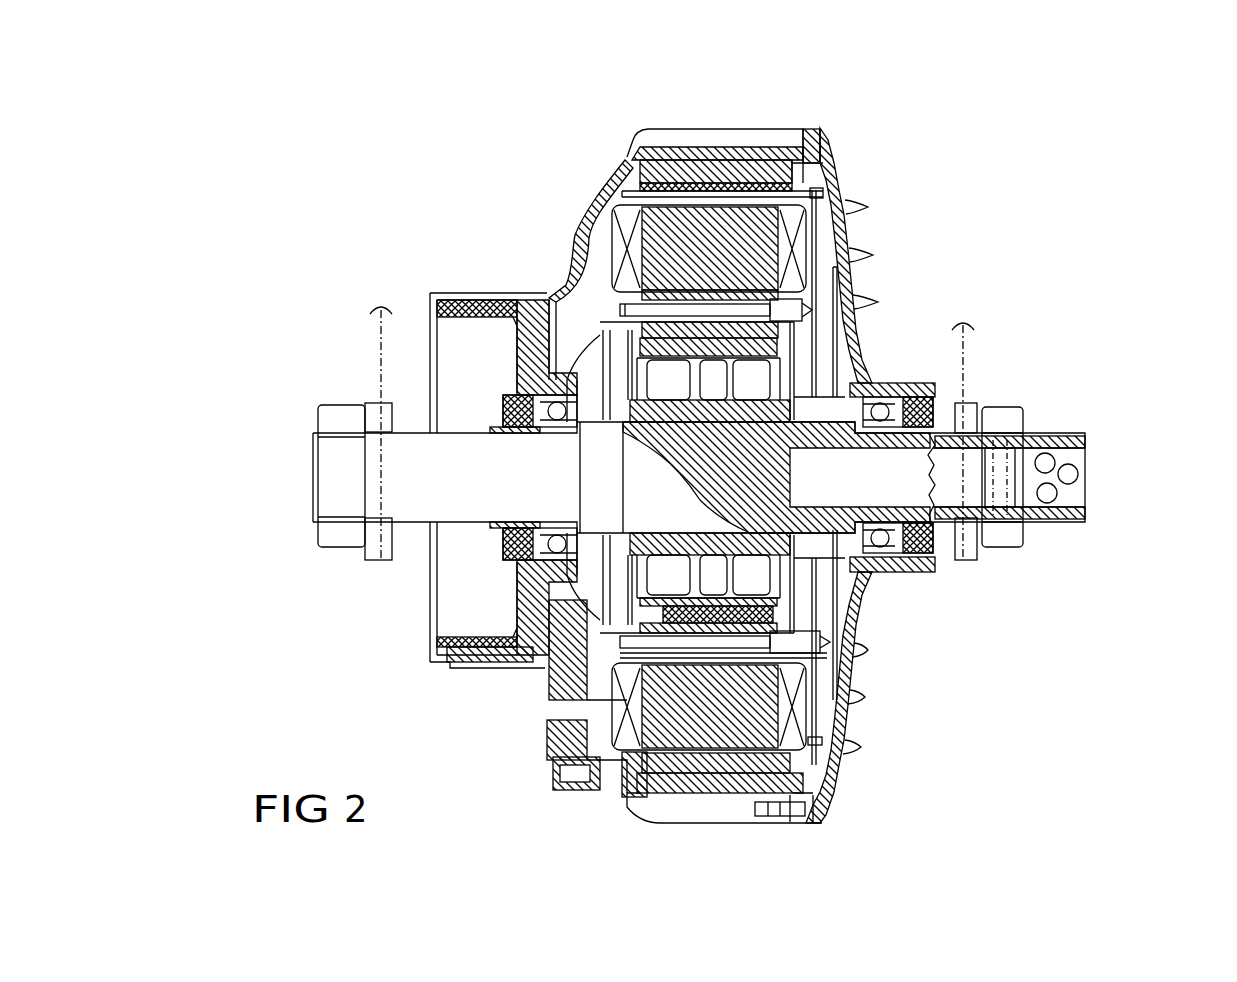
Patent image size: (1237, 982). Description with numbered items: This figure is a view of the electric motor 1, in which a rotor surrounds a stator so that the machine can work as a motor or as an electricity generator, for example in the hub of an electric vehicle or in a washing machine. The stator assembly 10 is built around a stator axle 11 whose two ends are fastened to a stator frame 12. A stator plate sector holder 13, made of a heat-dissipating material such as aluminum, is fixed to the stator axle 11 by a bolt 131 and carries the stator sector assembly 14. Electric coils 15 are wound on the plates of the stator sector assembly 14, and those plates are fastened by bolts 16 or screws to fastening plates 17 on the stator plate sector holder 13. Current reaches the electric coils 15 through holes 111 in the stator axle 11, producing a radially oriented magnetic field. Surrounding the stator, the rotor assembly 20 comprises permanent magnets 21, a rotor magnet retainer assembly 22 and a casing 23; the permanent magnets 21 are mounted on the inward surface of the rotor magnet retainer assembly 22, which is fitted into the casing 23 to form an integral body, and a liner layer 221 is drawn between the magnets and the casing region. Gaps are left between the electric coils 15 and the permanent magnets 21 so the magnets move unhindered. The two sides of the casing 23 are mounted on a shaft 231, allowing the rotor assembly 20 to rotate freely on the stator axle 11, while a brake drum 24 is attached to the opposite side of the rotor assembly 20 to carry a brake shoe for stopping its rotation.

The electric motor 1 is at (880, 815).
The stator assembly 10 is at (596, 240).
The stator axle 11 is at (455, 500).
The holes 111 is at (1085, 492).
The stator frame 12 is at (340, 572).
The stator plate sector holder 13 is at (640, 350).
The bolt 131 is at (630, 557).
The stator sector assembly 14 is at (790, 237).
The electric coils 15 is at (790, 283).
The bolts 16 is at (645, 688).
The fastening plates 17 is at (790, 593).
The rotor assembly 20 is at (605, 157).
The permanent magnets 21 is at (753, 163).
The rotor magnet retainer assembly 22 is at (808, 180).
The liner 221 is at (732, 167).
The casing 23 is at (687, 147).
The shaft 231 is at (503, 395).
The brake drum 24 is at (432, 327).